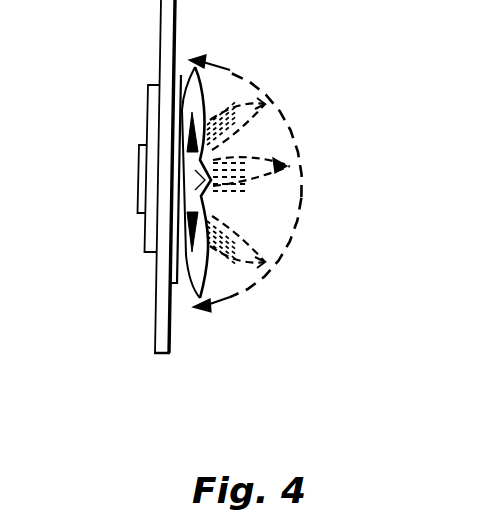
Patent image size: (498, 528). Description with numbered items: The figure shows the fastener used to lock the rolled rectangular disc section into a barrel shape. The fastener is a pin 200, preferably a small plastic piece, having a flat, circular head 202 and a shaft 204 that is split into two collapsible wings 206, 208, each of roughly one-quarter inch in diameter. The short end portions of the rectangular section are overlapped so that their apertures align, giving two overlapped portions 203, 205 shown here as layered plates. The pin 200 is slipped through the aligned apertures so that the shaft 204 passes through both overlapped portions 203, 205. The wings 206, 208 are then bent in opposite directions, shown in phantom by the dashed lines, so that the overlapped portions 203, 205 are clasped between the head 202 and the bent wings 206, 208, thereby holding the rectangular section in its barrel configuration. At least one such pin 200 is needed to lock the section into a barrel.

The pin 200 is at (251, 327).
The head 202 is at (138, 166).
The overlapped portion 203 is at (160, 355).
The shaft 204 is at (211, 265).
The overlapped portion 205 is at (178, 286).
The collapsible wing 206 is at (300, 146).
The collapsible wing 208 is at (302, 218).